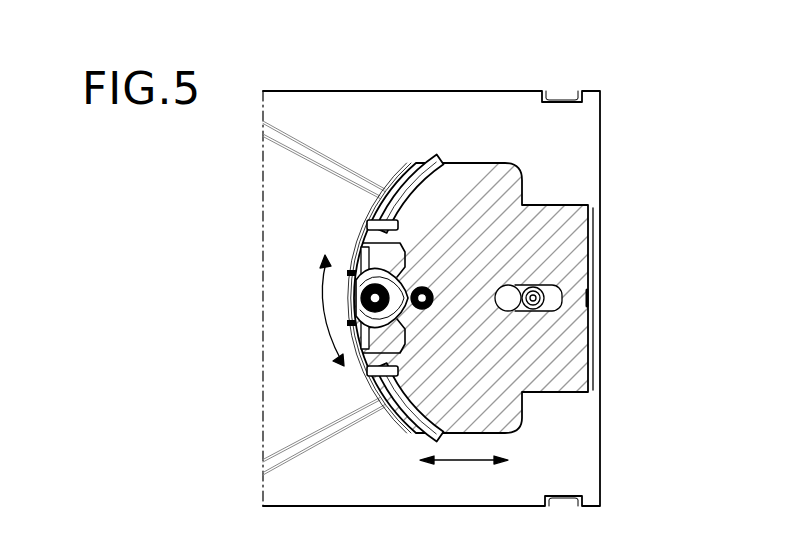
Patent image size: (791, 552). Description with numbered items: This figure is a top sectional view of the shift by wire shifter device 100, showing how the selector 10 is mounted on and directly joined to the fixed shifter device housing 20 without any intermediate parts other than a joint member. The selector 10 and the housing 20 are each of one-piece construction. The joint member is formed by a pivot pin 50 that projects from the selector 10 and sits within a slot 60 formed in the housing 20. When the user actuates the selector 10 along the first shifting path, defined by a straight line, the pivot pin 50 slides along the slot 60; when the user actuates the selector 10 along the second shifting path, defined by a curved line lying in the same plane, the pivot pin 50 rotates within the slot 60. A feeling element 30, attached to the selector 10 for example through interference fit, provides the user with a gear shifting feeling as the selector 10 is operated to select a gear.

The selector 10 is at (472, 193).
The shifter device housing 20 is at (333, 100).
The feeling element 30 is at (362, 270).
The pivot pin 50 is at (545, 307).
The slot 60 is at (563, 302).
The shift by wire shifter device 100 is at (554, 74).